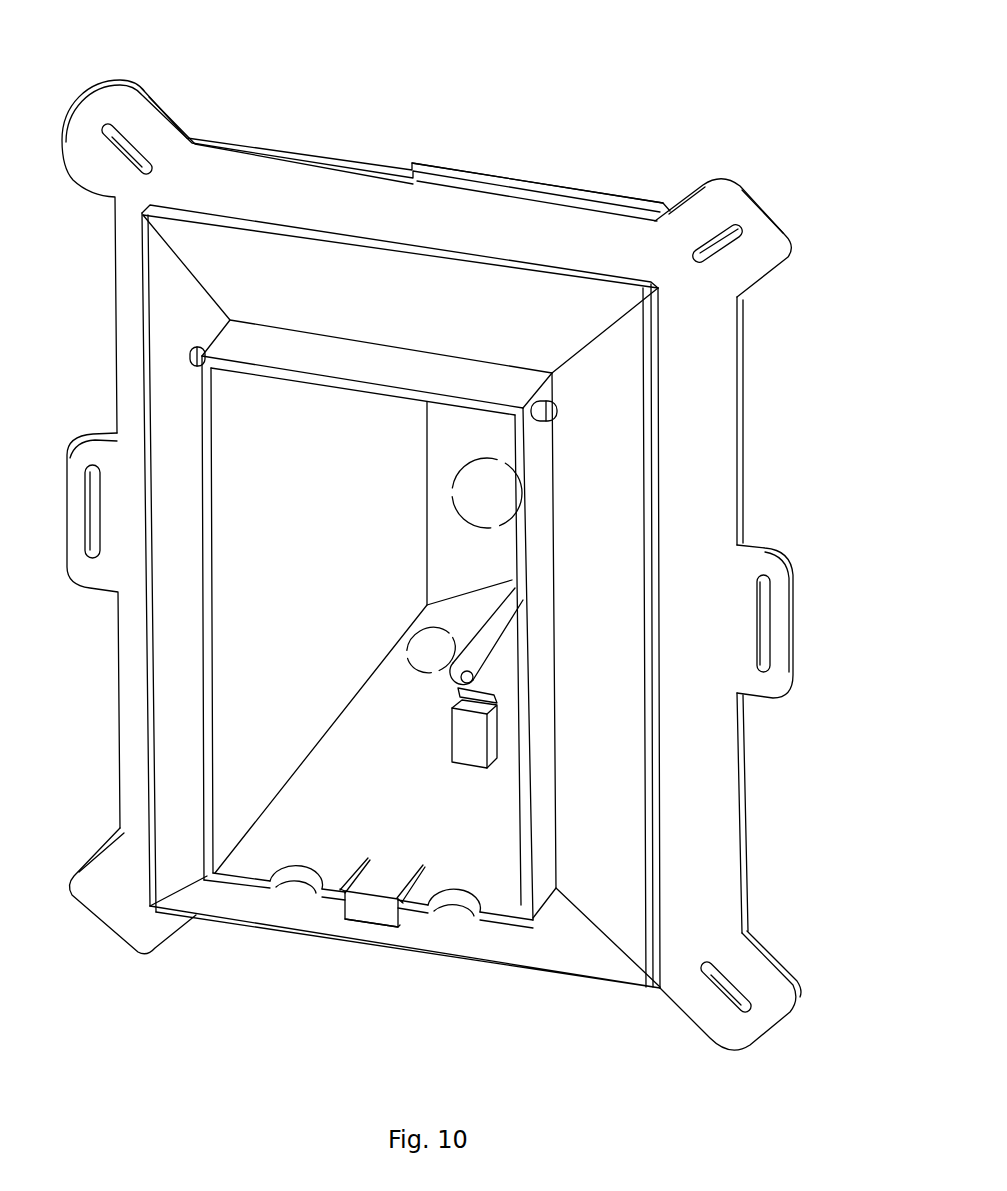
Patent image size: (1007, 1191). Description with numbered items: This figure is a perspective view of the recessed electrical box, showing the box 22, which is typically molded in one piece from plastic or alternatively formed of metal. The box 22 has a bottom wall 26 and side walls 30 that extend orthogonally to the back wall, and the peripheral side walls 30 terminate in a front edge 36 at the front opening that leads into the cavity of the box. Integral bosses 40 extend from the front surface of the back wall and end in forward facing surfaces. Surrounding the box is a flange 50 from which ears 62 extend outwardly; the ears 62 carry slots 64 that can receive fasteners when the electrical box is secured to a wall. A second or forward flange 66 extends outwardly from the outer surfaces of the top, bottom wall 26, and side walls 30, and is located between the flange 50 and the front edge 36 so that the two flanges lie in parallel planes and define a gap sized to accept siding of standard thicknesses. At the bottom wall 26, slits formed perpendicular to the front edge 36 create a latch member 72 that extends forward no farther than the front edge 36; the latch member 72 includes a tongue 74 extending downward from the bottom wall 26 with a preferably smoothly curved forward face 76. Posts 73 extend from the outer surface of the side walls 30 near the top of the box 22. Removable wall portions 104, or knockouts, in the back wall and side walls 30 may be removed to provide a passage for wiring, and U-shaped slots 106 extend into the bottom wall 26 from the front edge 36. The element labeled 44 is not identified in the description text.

The box 22 is at (467, 140).
The bottom wall 26 is at (368, 754).
The side walls 30 is at (367, 638).
The front edge 36 is at (147, 348).
The bosses 40 is at (474, 734).
The clamp arm 44 is at (460, 680).
The flange 50 is at (431, 565).
The ears 62 is at (780, 233).
The slots 64 is at (724, 240).
The second flange 66 is at (401, 601).
The latch member 72 is at (378, 877).
The posts 73 is at (553, 400).
The tongue 74 is at (352, 902).
The forward face 76 is at (372, 922).
The removable wall portions 104 is at (487, 493).
The U-shaped slots 106 is at (303, 880).